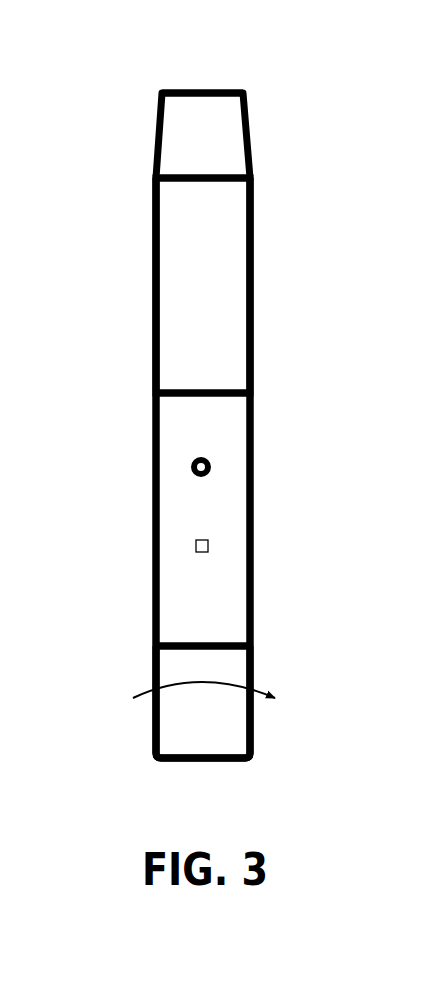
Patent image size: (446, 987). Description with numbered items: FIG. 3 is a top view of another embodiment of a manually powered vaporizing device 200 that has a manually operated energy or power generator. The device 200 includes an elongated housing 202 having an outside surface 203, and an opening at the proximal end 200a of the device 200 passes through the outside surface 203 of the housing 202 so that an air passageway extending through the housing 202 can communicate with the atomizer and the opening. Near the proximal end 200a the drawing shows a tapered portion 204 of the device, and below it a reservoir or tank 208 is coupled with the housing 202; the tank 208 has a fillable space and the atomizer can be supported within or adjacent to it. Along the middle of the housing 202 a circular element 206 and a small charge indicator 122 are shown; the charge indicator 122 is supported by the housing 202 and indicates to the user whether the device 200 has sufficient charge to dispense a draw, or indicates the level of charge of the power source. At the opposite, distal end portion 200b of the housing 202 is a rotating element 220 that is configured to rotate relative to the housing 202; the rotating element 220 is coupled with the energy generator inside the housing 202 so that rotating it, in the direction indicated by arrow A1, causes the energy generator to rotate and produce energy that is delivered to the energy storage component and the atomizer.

The manually powered vaporizing device 200 is at (148, 42).
The proximal end 200a is at (205, 90).
The distal end portion 200b is at (180, 648).
The housing 202 is at (118, 305).
The outside surface 203 is at (152, 370).
The mouthpiece 204 is at (177, 138).
The button 206 is at (190, 462).
The tank 208 is at (168, 236).
The charge indicator 122 is at (195, 544).
The rotating element 220 is at (197, 703).
The axis A1 is at (220, 702).